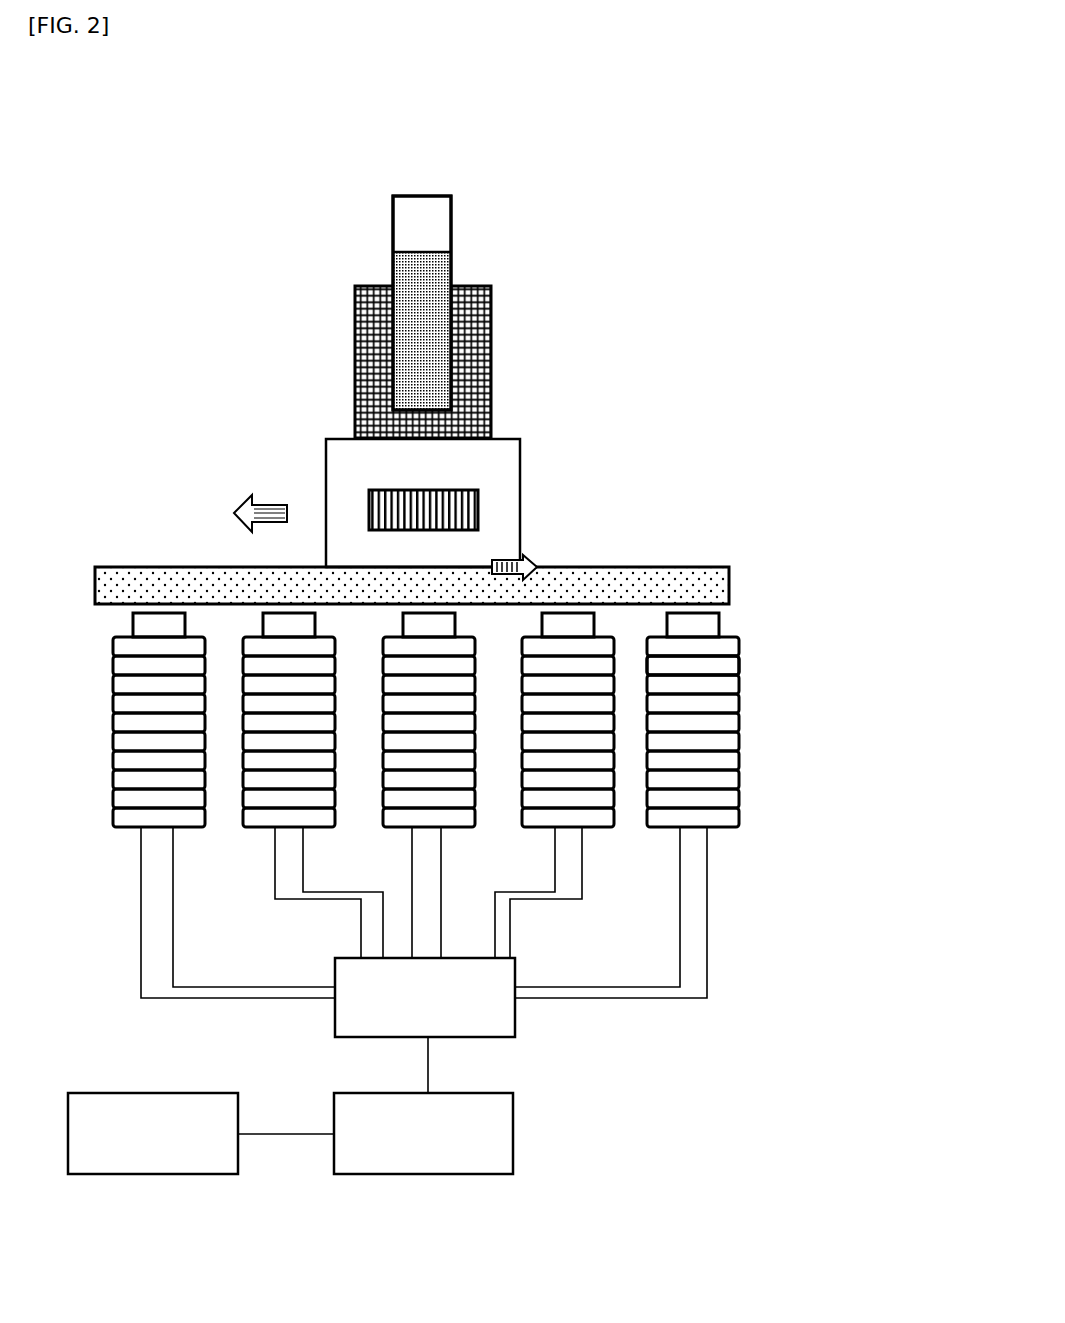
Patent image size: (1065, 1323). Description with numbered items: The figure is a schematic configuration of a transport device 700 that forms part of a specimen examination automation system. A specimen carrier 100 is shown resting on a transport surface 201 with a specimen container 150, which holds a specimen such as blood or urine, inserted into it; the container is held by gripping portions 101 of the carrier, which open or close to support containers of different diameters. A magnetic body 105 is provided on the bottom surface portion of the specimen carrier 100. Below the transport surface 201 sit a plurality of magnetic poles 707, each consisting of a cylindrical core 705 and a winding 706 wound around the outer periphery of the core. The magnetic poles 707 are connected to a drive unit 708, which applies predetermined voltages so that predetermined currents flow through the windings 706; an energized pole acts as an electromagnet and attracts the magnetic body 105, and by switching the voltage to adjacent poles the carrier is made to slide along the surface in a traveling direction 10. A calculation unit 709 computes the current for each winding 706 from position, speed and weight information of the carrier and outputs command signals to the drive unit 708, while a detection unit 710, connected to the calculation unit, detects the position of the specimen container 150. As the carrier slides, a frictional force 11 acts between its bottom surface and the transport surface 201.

The transport device 700 is at (700, 108).
The specimen container 150 is at (452, 217).
The gripping portion 101 is at (491, 315).
The specimen carrier 100 is at (338, 440).
The magnetic body 105 is at (455, 513).
The traveling direction 10 is at (240, 510).
The frictional force 11 is at (528, 556).
The transport surface 201 is at (729, 568).
The core 705 is at (695, 623).
The winding 706 is at (742, 692).
The magnetic pole 707 is at (522, 719).
The drive unit 708 is at (493, 1021).
The calculation unit 709 is at (512, 1163).
The detection unit 710 is at (208, 1163).